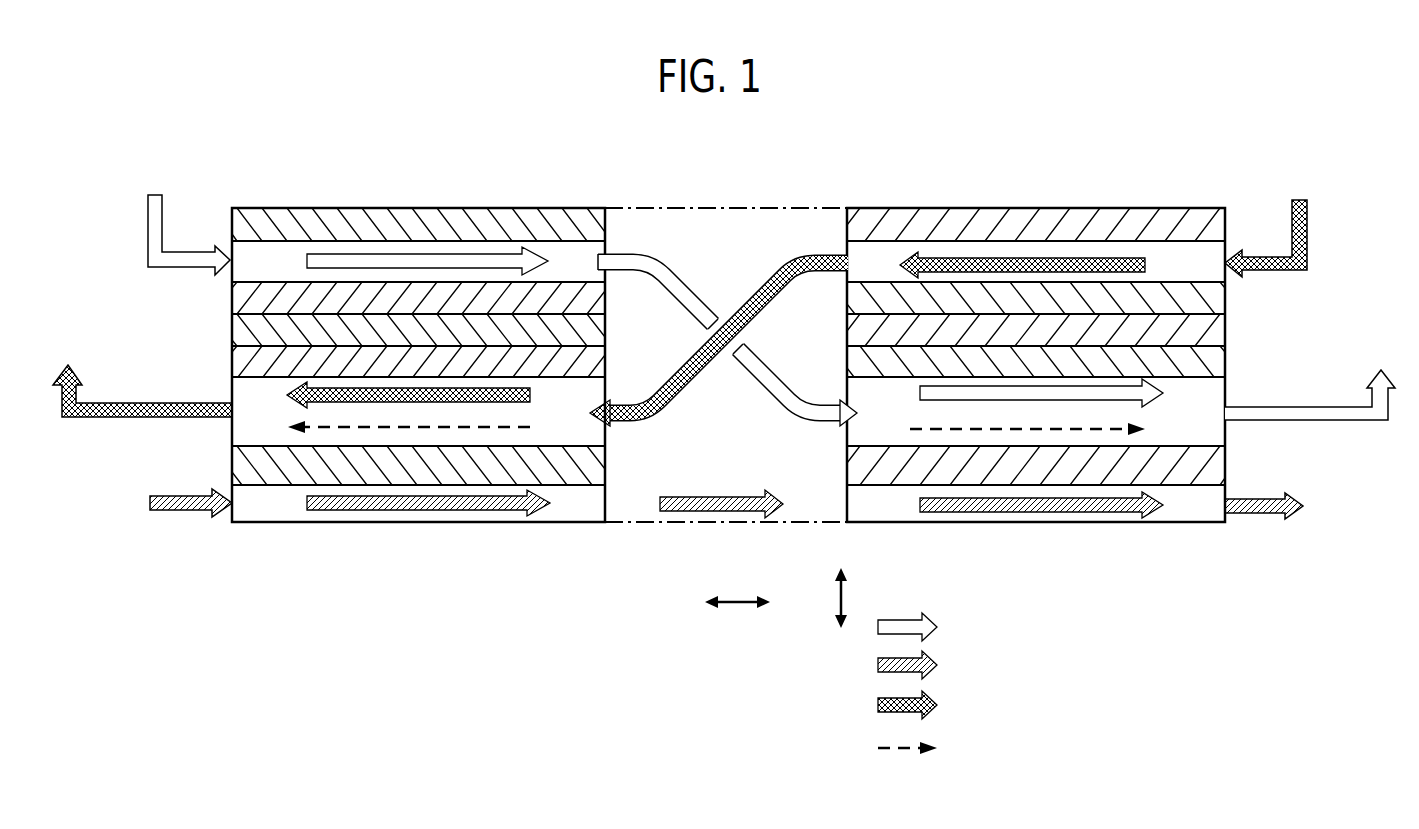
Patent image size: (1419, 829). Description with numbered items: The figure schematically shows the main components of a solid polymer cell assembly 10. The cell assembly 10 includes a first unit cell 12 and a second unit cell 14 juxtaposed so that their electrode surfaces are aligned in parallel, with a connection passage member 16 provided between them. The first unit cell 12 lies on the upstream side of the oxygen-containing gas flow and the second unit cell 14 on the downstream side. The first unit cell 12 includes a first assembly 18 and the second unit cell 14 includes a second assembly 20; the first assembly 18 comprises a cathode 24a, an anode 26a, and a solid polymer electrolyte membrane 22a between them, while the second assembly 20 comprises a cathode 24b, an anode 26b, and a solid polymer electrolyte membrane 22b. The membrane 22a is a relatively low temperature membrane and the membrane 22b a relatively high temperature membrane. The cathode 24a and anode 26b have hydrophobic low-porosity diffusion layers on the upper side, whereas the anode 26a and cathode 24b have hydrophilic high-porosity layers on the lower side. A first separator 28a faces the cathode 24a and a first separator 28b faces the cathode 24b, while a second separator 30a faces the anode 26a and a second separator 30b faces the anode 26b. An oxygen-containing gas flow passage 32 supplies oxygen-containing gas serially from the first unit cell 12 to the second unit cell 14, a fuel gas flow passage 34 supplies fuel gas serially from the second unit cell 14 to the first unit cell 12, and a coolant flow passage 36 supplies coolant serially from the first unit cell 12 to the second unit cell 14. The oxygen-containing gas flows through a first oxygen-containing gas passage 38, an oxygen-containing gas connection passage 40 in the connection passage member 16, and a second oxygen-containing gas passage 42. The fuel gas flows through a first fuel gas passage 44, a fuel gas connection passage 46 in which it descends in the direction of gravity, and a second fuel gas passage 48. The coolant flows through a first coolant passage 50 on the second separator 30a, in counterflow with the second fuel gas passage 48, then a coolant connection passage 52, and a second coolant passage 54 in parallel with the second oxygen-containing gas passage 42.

The solid polymer cell assembly 10 is at (915, 127).
The first unit cell 12 is at (427, 186).
The second unit cell 14 is at (1029, 186).
The connection passage member 16 is at (744, 195).
The first assembly 18 is at (168, 278).
The second assembly 20 is at (1284, 278).
The solid polymer electrolyte membrane 22a is at (232, 329).
The solid polymer electrolyte membrane 22b is at (1225, 329).
The cathode 24a is at (232, 297).
The cathode 24b is at (1225, 361).
The anode 26a is at (232, 361).
The anode 26b is at (1225, 297).
The first separator 28a is at (277, 213).
The first separator 28b is at (1225, 467).
The second separator 30a is at (232, 466).
The second separator 30b is at (1178, 220).
The oxygen-containing gas flow passage 32 is at (190, 252).
The fuel gas flow passage 34 is at (1265, 256).
The coolant flow passage 36 is at (178, 516).
The first oxygen-containing gas passage 38 is at (567, 248).
The oxygen-containing gas connection passage 40 is at (682, 290).
The second oxygen-containing gas passage 42 is at (847, 390).
The first fuel gas passage 44 is at (888, 243).
The fuel gas connection passage 46 is at (768, 290).
The second fuel gas passage 48 is at (590, 388).
The first coolant passage 50 is at (355, 505).
The coolant connection passage 52 is at (720, 492).
The second coolant passage 54 is at (898, 523).